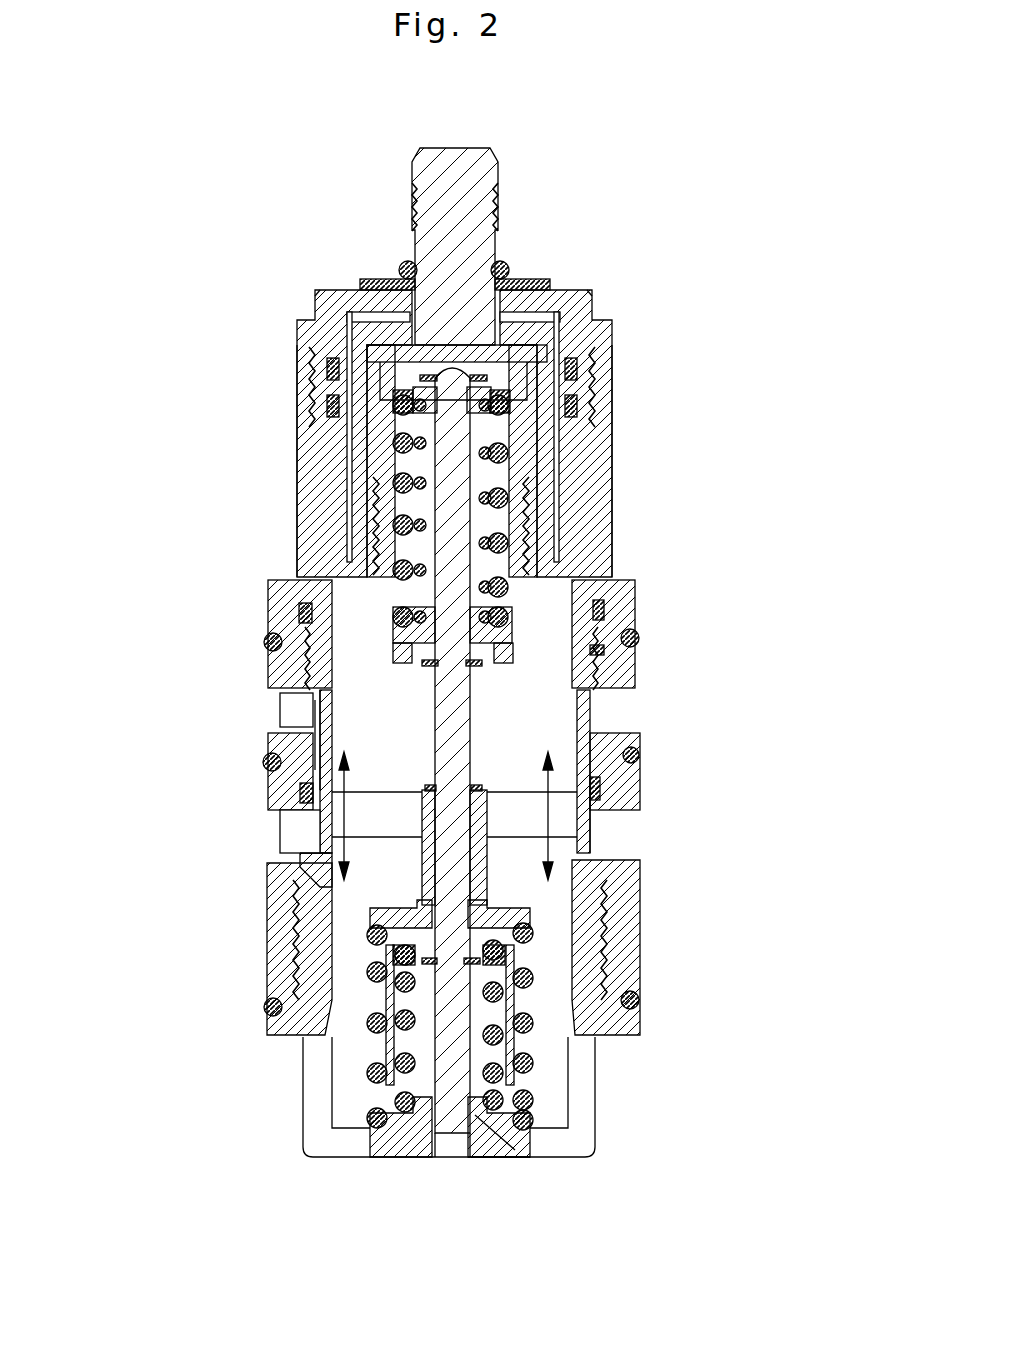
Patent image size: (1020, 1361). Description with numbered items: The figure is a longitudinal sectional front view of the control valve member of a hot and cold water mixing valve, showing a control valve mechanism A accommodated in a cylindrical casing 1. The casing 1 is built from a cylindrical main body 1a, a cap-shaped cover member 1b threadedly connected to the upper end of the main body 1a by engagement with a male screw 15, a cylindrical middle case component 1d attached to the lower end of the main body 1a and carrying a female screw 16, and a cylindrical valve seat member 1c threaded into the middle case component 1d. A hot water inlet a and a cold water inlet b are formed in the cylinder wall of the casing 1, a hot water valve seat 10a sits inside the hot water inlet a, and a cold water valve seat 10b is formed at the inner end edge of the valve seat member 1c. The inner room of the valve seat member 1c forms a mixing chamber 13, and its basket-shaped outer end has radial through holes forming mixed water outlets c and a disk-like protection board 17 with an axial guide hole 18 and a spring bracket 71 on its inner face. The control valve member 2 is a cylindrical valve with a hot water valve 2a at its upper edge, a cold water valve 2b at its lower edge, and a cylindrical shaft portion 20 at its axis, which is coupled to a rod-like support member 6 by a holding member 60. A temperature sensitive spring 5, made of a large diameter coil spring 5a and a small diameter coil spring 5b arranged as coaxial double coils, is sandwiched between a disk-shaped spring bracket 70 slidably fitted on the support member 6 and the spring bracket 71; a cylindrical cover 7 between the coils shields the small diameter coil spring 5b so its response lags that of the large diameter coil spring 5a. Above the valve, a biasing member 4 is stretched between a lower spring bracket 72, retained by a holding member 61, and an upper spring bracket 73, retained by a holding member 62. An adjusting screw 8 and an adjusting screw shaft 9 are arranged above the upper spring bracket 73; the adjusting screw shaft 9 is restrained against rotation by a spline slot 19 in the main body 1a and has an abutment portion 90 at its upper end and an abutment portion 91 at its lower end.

The casing 1 is at (638, 586).
The main body 1a is at (578, 477).
The cover member 1b is at (331, 298).
The valve seat member 1c is at (634, 985).
The middle case component 1d is at (276, 590).
The control valve member 2 is at (592, 812).
The hot water valve 2a is at (592, 690).
The cold water valve 2b is at (592, 855).
The biasing member 4 is at (500, 585).
The temperature sensitive spring 5 is at (410, 1203).
The large diameter coil spring 5a is at (372, 1120).
The small diameter coil spring 5b is at (403, 1118).
The support member 6 is at (457, 440).
The cover 7 is at (265, 1010).
The adjusting screw 8 is at (466, 173).
The adjusting screw shaft 9 is at (332, 310).
The hot water valve seat 10a is at (605, 650).
The cold water valve seat 10b is at (600, 890).
The mixing chamber 13 is at (548, 1053).
The male screw 15 is at (305, 398).
The female screw 16 is at (300, 945).
The protection board 17 is at (488, 1148).
The guide hole 18 is at (450, 1125).
The spline slot 19 is at (305, 475).
The cylindrical shaft portion 20 is at (302, 860).
The holding member 60 is at (425, 785).
The holding member 61 is at (428, 668).
The holding member 62 is at (595, 313).
The spring bracket 70 is at (500, 928).
The spring bracket 71 is at (560, 1158).
The lower spring bracket 72 is at (395, 655).
The upper spring bracket 73 is at (350, 353).
The abutment portion 90 is at (423, 363).
The abutment portion 91 is at (266, 642).
The hot water inlet a is at (288, 707).
The cold water inlet b is at (282, 840).
The mixed water outlet c is at (312, 1090).
The control valve mechanism A is at (598, 733).